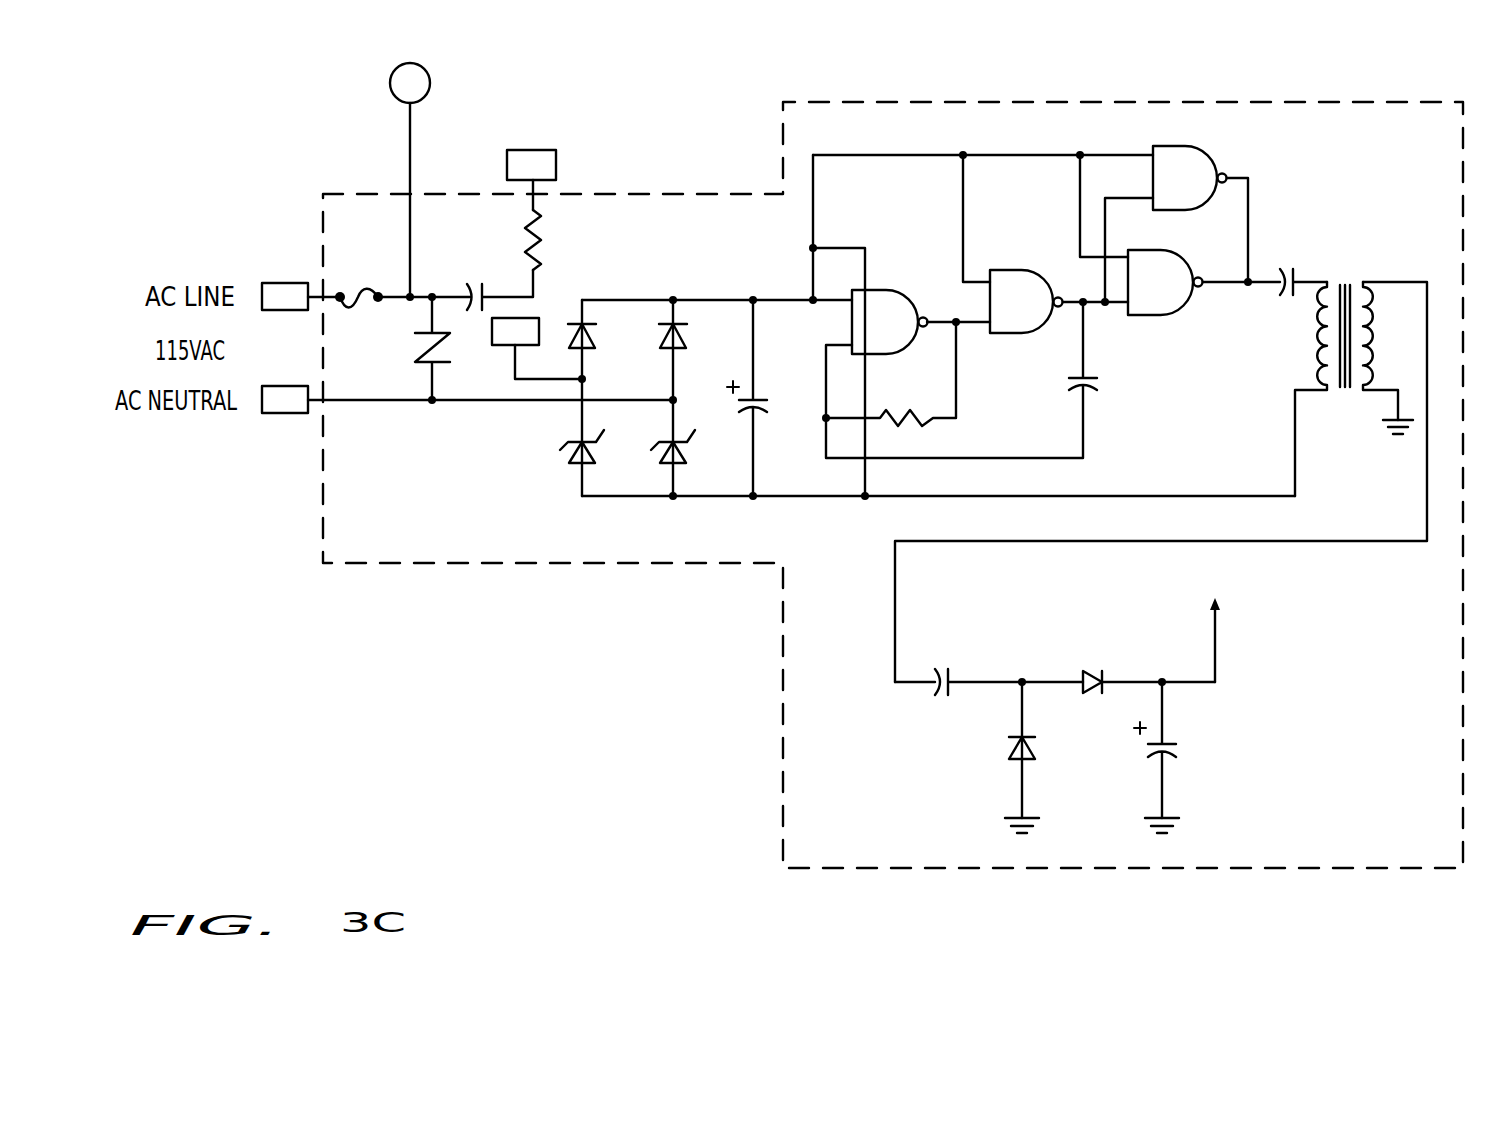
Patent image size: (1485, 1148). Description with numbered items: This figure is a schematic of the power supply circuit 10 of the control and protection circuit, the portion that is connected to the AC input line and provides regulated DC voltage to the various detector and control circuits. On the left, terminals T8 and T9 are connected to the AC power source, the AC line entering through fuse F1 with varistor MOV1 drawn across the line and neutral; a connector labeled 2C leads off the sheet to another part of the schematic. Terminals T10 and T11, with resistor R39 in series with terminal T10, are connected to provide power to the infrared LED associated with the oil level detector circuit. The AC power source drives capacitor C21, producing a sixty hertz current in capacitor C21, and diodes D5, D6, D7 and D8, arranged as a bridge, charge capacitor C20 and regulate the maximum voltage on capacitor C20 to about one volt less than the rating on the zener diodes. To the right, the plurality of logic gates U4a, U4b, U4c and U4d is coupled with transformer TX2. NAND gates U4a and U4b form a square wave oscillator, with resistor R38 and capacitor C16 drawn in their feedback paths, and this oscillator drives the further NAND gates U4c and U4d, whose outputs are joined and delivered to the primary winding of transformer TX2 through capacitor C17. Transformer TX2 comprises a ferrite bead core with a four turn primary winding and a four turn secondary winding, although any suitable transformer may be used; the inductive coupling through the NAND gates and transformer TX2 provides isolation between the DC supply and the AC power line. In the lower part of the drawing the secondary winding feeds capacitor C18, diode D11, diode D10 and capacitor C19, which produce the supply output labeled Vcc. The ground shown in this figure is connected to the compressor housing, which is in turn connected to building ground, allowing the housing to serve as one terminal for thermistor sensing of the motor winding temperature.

The power supply circuit 10 is at (783, 108).
The connector to FIG. 2C is at (410, 180).
The terminal T8 is at (301, 297).
The terminal T9 is at (469, 400).
The terminal T10 is at (531, 180).
The terminal T11 is at (539, 350).
The fuse F1 is at (402, 282).
The metal oxide varistor MOV1 is at (401, 348).
The capacitor C21 is at (494, 280).
The resistor R39 is at (557, 240).
The diode D7 is at (600, 350).
The diode D8 is at (690, 350).
The diode D5 is at (597, 448).
The diode D6 is at (688, 448).
The capacitor C20 is at (764, 398).
The NAND gate U4a is at (952, 374).
The NAND gate U4b is at (1071, 265).
The NAND gate U4c is at (1200, 214).
The NAND gate U4d is at (1204, 282).
The resistor R38 is at (891, 386).
The capacitor C16 is at (1099, 356).
The capacitor C17 is at (1302, 264).
The transformer TX2 is at (1161, 482).
The capacitor C18 is at (989, 664).
The diode D11 is at (1145, 663).
The diode D10 is at (999, 757).
The capacitor C19 is at (1178, 757).
The supply voltage Vcc is at (1212, 625).